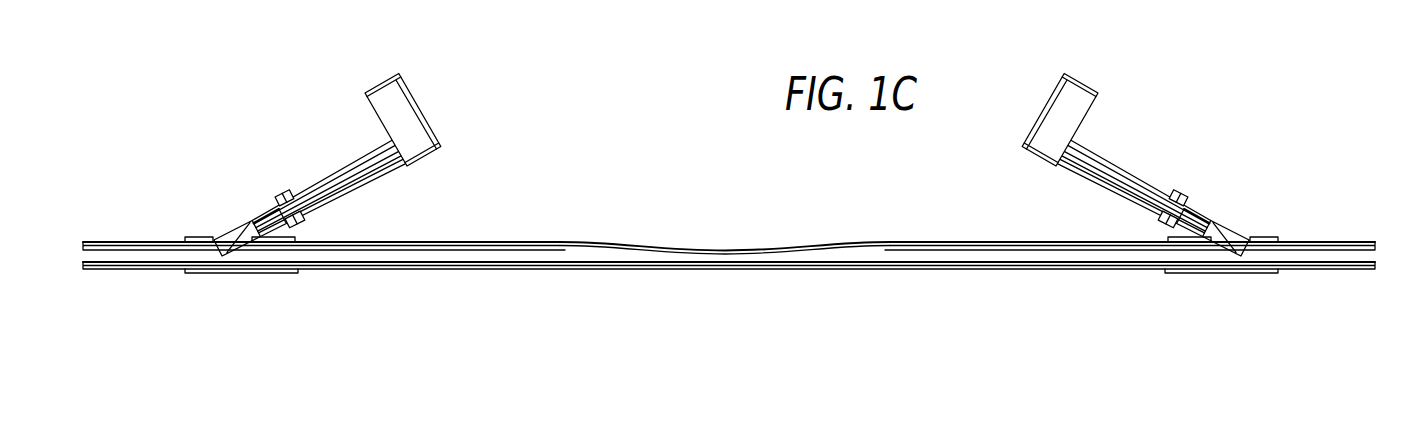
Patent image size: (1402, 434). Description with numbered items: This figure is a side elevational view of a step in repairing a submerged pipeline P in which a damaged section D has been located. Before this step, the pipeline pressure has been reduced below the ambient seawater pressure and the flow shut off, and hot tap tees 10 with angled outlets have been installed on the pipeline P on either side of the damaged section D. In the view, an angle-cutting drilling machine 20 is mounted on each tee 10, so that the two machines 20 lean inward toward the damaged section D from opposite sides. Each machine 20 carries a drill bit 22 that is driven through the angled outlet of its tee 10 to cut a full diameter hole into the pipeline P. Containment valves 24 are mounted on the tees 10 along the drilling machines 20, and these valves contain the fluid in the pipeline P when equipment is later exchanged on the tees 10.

The hot tap tee 10 is at (250, 217).
The angle-cutting drilling machine 20 is at (417, 98).
The drill bit 22 is at (238, 250).
The containment valve 24 is at (280, 190).
The pipeline P is at (115, 242).
The damaged section D is at (718, 251).